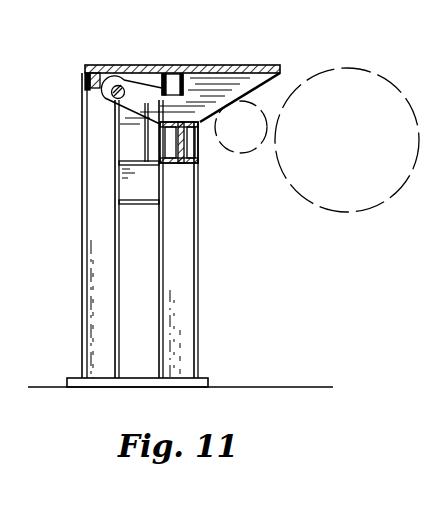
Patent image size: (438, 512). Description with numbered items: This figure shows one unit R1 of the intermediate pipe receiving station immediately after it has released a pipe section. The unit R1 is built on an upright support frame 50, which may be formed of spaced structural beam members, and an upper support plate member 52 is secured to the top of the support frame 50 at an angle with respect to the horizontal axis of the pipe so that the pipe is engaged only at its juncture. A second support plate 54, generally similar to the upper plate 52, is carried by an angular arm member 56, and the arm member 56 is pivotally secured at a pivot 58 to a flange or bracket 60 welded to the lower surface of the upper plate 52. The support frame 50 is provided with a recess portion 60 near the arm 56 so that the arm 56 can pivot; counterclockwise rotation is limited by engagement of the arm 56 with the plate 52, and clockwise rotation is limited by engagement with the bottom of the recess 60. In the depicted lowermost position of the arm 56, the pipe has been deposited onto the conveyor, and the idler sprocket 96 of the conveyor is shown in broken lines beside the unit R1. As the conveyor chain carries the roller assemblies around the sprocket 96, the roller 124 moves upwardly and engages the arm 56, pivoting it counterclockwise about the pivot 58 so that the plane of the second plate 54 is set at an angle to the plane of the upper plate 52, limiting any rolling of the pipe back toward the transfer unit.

The upright support frame 50 is at (98, 277).
The upper support plate member 52 is at (100, 63).
The second support plate 54 is at (248, 67).
The angular arm member 56 is at (200, 90).
The pivot 58 is at (106, 88).
The bracket / recess portion 60 is at (138, 80).
The roller 124 is at (257, 107).
The idler sprocket 96 is at (373, 73).
The unit R1 is at (199, 297).